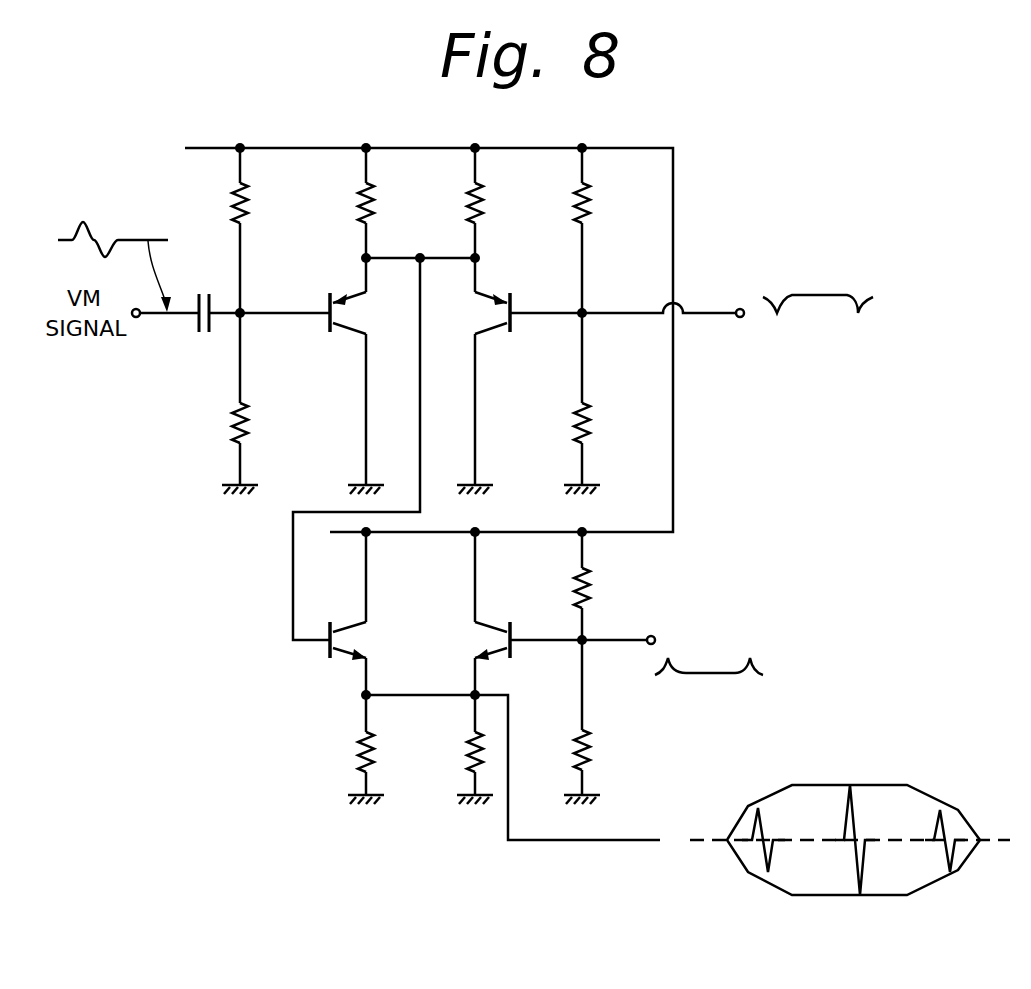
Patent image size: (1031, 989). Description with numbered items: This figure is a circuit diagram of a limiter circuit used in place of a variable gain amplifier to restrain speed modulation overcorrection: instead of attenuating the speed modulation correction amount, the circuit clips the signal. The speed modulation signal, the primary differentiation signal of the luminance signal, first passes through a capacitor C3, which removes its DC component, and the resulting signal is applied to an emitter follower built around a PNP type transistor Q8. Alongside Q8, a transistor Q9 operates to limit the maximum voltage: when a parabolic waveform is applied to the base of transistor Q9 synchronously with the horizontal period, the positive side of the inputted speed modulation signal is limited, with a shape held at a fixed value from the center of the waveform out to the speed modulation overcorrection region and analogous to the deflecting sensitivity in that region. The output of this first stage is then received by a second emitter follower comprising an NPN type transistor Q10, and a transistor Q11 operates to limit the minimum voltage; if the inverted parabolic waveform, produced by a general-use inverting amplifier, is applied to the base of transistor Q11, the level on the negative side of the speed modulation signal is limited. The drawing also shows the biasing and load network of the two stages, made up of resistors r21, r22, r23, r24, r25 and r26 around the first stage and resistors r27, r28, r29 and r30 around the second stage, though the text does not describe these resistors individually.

The resistor r21 is at (260, 203).
The resistor r22 is at (260, 423).
The resistor r23 is at (386, 203).
The resistor r24 is at (495, 203).
The resistor r25 is at (602, 203).
The resistor r26 is at (602, 423).
The resistor r27 is at (345, 752).
The resistor r28 is at (453, 752).
The resistor r29 is at (602, 588).
The resistor r30 is at (602, 750).
The capacitor C3 is at (202, 298).
The PNP type transistor Q8 is at (331, 300).
The transistor Q9 is at (507, 300).
The NPN type transistor Q10 is at (342, 625).
The transistor Q11 is at (509, 625).